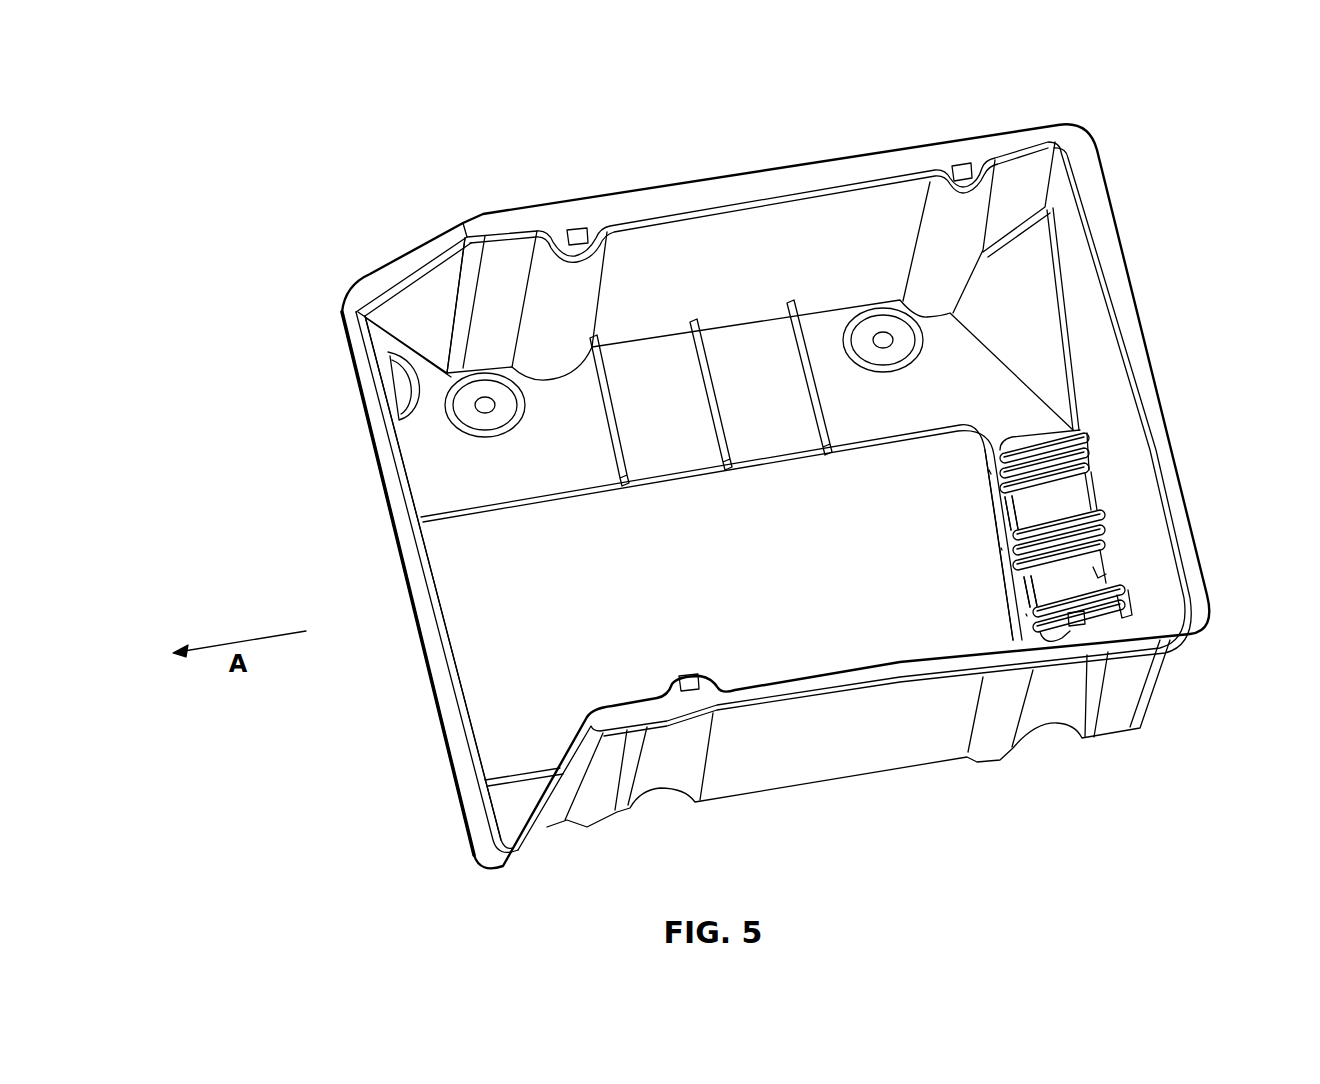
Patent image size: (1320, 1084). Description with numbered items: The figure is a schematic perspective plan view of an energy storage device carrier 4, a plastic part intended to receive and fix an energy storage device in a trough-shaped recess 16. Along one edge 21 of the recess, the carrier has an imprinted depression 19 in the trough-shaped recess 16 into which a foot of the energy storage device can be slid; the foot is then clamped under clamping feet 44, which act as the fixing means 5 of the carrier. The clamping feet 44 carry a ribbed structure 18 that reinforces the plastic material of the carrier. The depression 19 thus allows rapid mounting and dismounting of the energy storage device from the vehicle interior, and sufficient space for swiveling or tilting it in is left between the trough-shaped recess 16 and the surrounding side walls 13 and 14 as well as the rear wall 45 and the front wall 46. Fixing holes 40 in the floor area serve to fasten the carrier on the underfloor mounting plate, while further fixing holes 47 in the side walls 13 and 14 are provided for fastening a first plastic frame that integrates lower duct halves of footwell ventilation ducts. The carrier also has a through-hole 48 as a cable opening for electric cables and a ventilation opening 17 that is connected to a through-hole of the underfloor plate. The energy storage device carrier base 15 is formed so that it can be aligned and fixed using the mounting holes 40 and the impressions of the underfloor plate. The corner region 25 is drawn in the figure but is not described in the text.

The energy storage device carrier 4 is at (1100, 100).
The fixing means 5 is at (997, 473).
The side wall 13 is at (798, 232).
The side wall 14 is at (860, 738).
The energy storage device carrier base 15 is at (438, 563).
The trough-shaped recess 16 is at (687, 584).
The ventilation opening 17 is at (1086, 562).
The ribbed structure 18 is at (1082, 448).
The imprinted depression 19 is at (1000, 523).
The edge 21 is at (1008, 585).
The corner wall 25 is at (368, 305).
The fixing holes 40 is at (485, 403).
The clamping feet 44 is at (1040, 455).
The rear wall 45 is at (1085, 318).
The front wall 46 is at (443, 659).
The fixing holes 47 is at (577, 232).
The through-hole 48 is at (395, 383).